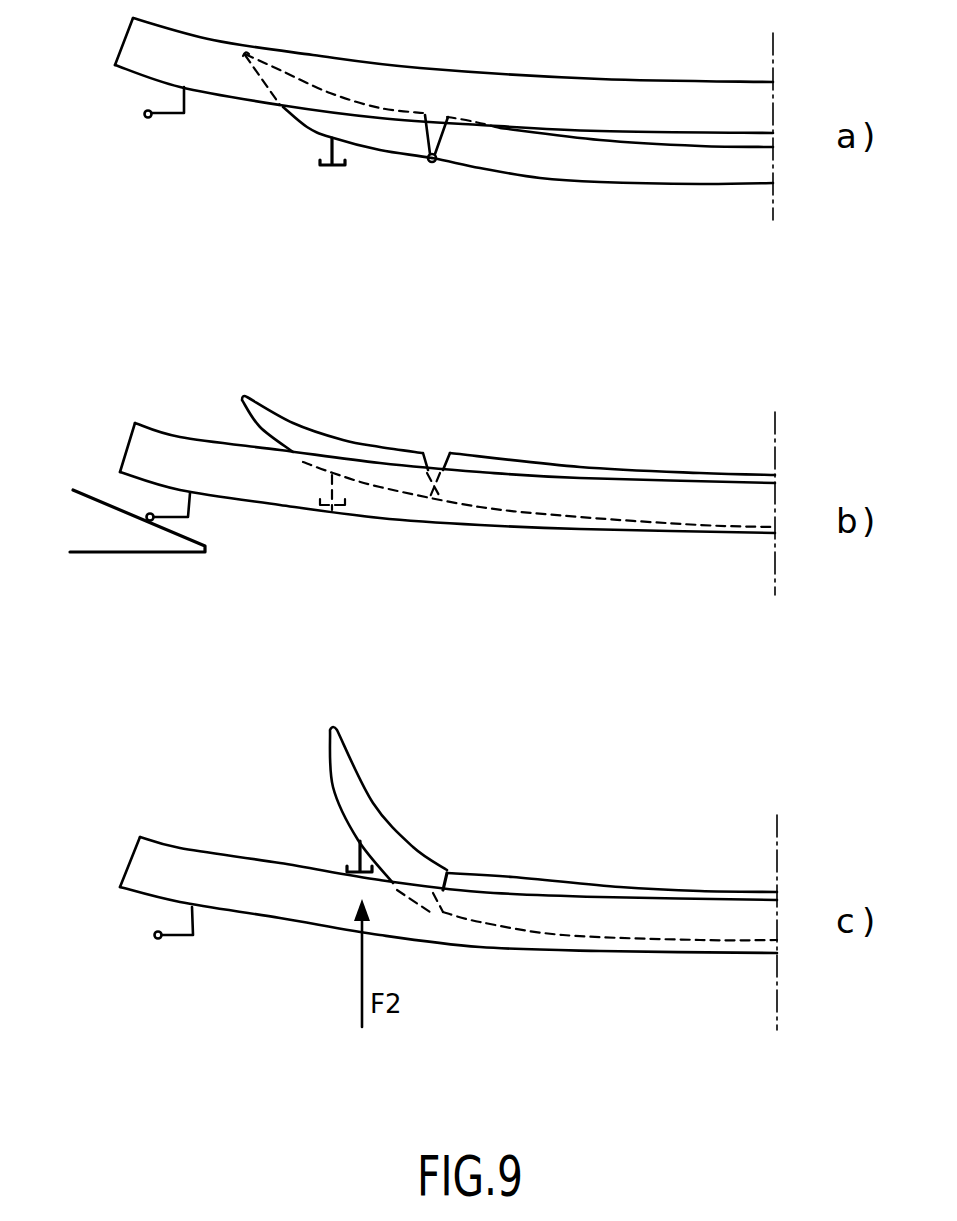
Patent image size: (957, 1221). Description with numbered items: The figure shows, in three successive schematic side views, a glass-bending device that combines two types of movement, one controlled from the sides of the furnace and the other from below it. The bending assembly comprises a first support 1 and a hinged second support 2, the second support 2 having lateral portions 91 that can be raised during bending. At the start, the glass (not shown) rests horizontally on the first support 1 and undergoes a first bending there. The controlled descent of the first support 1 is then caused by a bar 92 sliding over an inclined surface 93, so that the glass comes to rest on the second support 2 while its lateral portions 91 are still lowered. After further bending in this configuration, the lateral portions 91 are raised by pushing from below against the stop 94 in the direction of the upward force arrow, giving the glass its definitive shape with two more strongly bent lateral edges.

The first support 1 is at (608, 78).
The second support 2 is at (600, 185).
The lateral portions 91 is at (307, 127).
The bar 92 is at (149, 119).
The inclined surface 93 is at (189, 538).
The stop 94 is at (343, 166).